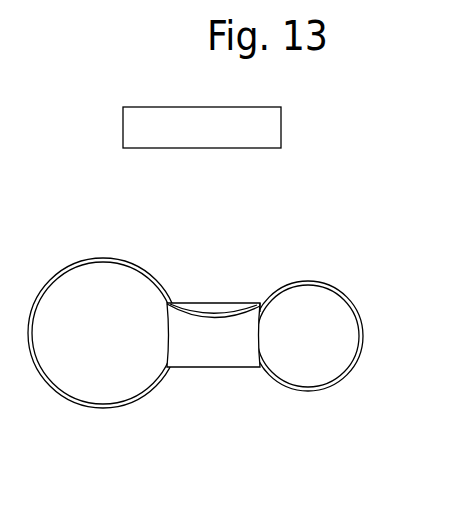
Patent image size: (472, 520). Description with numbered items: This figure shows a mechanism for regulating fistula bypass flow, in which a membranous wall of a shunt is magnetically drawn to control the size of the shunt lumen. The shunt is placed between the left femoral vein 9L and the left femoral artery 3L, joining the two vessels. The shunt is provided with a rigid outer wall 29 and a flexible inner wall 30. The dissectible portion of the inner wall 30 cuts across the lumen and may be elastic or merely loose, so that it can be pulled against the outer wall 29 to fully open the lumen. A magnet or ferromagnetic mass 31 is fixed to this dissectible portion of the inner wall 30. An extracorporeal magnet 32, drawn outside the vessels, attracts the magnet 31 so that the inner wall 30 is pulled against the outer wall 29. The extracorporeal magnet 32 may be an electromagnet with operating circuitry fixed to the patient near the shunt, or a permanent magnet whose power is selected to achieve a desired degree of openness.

The extracorporeal magnet 32 is at (282, 123).
The left femoral vein 9L is at (92, 406).
The left femoral artery 3L is at (333, 283).
The rigid outer wall 29 is at (239, 299).
The magnet 31 is at (183, 313).
The flexible inner wall 30 is at (258, 308).